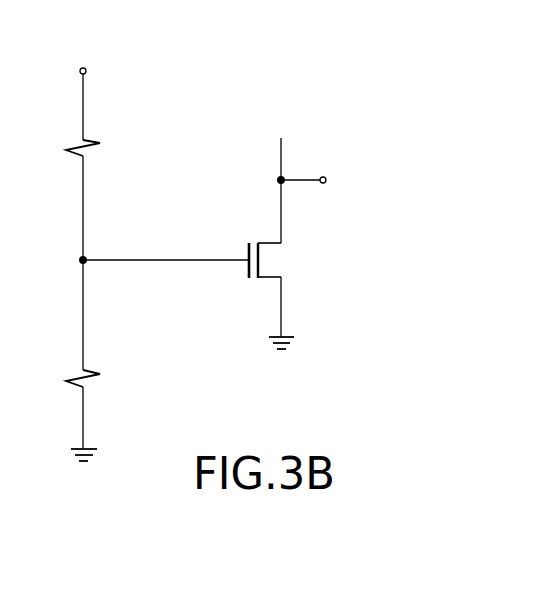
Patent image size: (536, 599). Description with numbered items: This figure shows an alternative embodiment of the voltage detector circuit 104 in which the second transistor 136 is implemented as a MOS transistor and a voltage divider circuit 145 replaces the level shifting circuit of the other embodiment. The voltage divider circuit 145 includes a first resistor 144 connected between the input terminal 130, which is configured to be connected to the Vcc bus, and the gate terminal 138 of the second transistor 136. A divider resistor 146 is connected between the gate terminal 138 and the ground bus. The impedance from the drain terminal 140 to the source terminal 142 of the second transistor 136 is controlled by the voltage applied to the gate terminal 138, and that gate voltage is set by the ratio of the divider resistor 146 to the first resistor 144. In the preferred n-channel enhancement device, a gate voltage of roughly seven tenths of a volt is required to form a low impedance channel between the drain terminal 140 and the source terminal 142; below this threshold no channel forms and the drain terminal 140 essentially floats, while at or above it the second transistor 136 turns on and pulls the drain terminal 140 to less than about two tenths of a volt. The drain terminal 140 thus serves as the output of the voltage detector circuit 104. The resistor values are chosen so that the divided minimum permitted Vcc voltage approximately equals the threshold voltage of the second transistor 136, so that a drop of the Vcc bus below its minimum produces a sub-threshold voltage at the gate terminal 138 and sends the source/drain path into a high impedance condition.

The voltage detector circuit 104 is at (257, 75).
The input terminal 130 is at (81, 93).
The second transistor 136 is at (300, 254).
The gate terminal 138 is at (205, 262).
The drain terminal 140 is at (281, 210).
The source terminal 142 is at (283, 309).
The first resistor 144 is at (90, 143).
The voltage divider circuit 145 is at (127, 222).
The divider resistor 146 is at (90, 373).